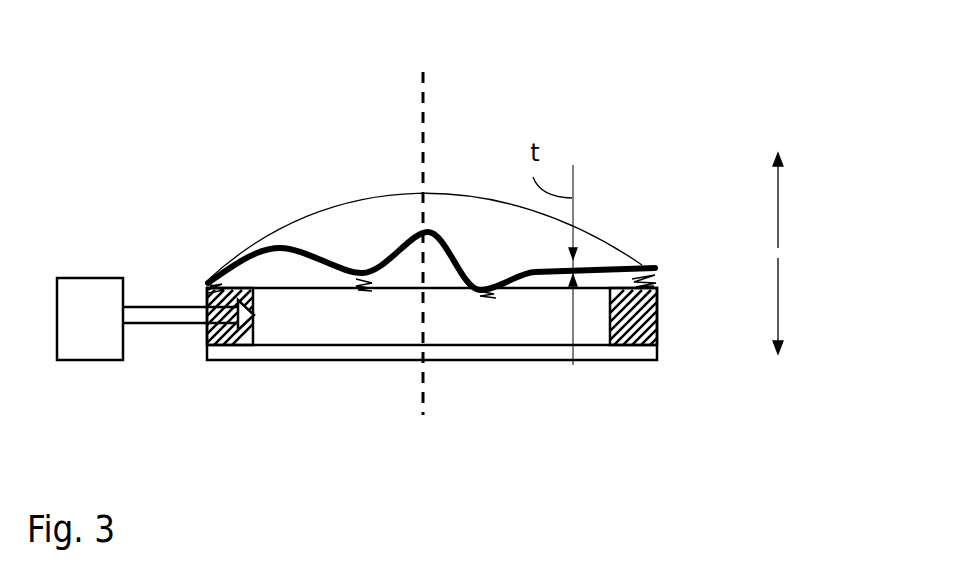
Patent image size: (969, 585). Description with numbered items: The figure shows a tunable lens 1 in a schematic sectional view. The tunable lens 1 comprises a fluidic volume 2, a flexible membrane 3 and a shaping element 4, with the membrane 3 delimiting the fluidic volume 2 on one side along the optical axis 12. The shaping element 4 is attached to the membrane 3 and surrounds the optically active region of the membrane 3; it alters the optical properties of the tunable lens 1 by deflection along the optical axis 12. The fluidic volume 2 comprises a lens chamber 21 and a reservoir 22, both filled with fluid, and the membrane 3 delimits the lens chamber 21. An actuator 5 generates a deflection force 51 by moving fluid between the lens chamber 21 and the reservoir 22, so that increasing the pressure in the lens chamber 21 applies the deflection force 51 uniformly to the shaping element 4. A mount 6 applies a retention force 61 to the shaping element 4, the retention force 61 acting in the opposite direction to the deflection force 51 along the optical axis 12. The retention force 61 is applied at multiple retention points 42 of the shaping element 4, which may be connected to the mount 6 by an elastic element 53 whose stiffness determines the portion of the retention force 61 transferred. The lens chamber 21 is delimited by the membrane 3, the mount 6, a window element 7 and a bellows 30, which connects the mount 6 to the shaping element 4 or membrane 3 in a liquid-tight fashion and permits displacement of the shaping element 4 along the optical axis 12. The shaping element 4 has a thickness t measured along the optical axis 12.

The tunable lens 1 is at (459, 222).
The optical axis 12 is at (422, 133).
The fluidic volume 2 is at (163, 355).
The reservoir 22 is at (95, 330).
The lens chamber 21 is at (303, 327).
The actuator 5 is at (167, 307).
The flexible membrane 3 is at (593, 233).
The shaping element 4 is at (449, 311).
The retention points 42 is at (208, 278).
The elastic element 53 is at (362, 290).
The bellows 30 is at (657, 283).
The mount 6 is at (657, 323).
The window element 7 is at (620, 352).
The deflection force 51 is at (797, 200).
The retention force 61 is at (797, 306).